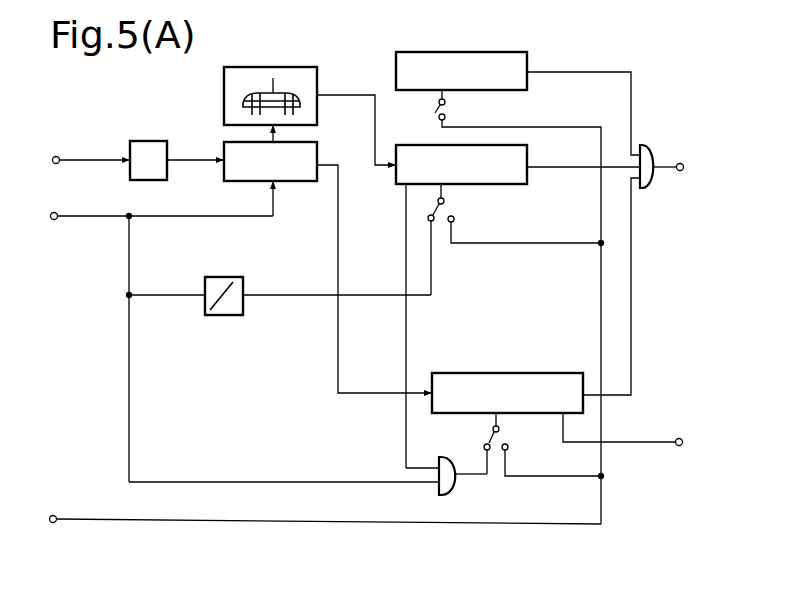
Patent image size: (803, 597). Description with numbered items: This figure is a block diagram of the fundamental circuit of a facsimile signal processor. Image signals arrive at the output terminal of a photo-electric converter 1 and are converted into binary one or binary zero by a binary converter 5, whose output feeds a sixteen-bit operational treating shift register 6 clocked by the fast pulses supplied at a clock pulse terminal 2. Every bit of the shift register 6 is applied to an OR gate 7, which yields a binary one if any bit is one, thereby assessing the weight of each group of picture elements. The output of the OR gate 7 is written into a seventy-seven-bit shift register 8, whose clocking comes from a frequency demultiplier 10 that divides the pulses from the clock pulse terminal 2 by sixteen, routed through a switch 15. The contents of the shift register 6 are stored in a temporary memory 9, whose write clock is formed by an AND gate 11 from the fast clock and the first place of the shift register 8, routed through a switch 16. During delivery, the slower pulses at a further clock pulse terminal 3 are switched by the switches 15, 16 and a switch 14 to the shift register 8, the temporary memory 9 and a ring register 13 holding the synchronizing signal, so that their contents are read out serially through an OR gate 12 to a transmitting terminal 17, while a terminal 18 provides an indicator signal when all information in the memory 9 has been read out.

The output terminal of a photo-electric converter 1 is at (59, 156).
The clock pulse terminal 2 is at (57, 212).
The clock pulse terminal 3 is at (56, 515).
The binary converter 5 is at (160, 140).
The operational treating shift register 6 is at (320, 150).
The OR gate 7 is at (284, 66).
The shift register 8 is at (531, 151).
The temporary memory 9 is at (527, 372).
The frequency demultiplier 10 is at (226, 277).
The AND gate 11 is at (453, 461).
The OR gate 12 is at (650, 143).
The ring register 13 is at (466, 51).
The switch 14 is at (447, 108).
The switch 15 is at (448, 210).
The switch 16 is at (503, 437).
The transmitting terminal 17 is at (683, 163).
The terminal 18 is at (679, 438).